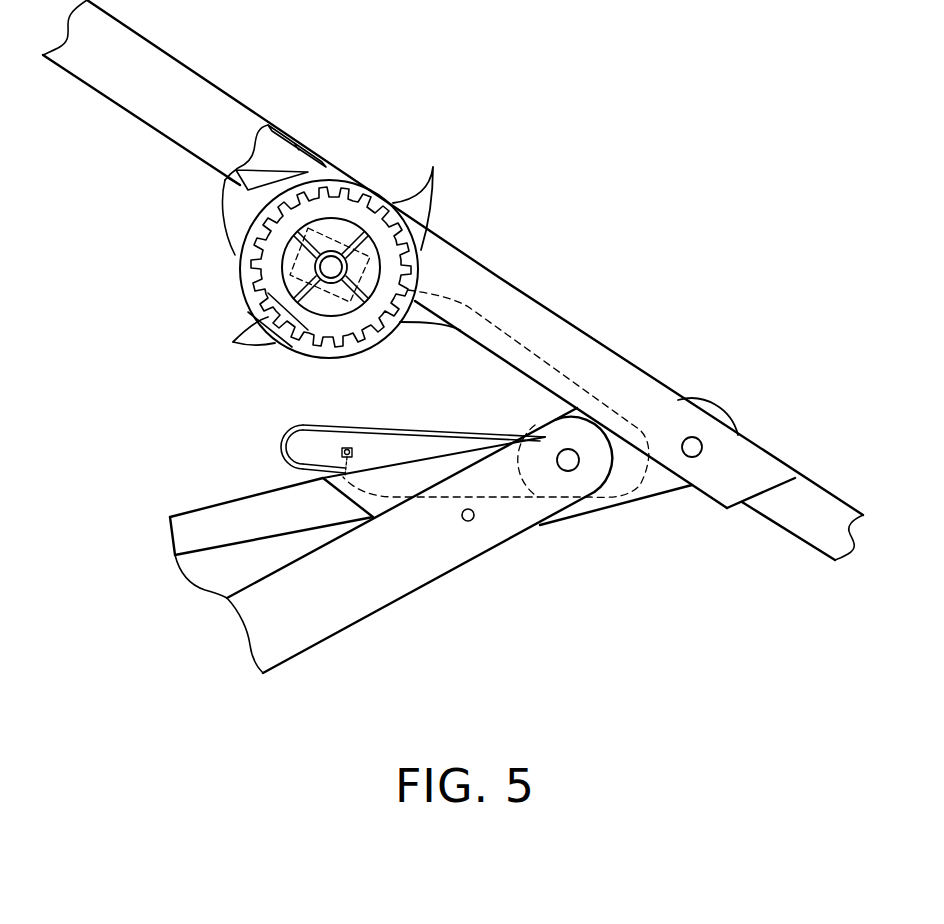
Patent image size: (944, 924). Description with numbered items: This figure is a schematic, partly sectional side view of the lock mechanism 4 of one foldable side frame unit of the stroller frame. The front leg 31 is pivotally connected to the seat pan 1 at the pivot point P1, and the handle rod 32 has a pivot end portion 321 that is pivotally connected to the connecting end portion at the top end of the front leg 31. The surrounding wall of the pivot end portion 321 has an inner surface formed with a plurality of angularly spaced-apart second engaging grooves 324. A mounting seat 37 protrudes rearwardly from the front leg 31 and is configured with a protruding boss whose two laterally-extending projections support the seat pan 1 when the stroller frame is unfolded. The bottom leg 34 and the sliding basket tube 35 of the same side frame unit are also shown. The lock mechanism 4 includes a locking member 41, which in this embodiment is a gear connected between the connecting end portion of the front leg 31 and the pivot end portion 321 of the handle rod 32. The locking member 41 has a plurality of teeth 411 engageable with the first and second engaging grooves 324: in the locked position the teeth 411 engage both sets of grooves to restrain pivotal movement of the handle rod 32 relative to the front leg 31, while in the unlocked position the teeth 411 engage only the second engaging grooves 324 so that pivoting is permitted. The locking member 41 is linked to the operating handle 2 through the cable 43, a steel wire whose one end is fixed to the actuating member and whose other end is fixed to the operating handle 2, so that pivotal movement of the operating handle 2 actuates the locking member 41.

The seat pan 1 is at (665, 493).
The operating handle 2 is at (288, 435).
The lock mechanism 4 is at (331, 140).
The front leg 31 is at (755, 473).
The handle rod 32 is at (147, 95).
The bottom leg 34 is at (377, 588).
The sliding basket tube 35 is at (253, 518).
The mounting seat 37 is at (637, 443).
The locking member 41 is at (360, 217).
The cable 43 is at (527, 340).
The pivot end portion 321 is at (248, 258).
The second engaging grooves 324 is at (236, 343).
The teeth 411 is at (433, 167).
The pivot point P1 is at (700, 437).